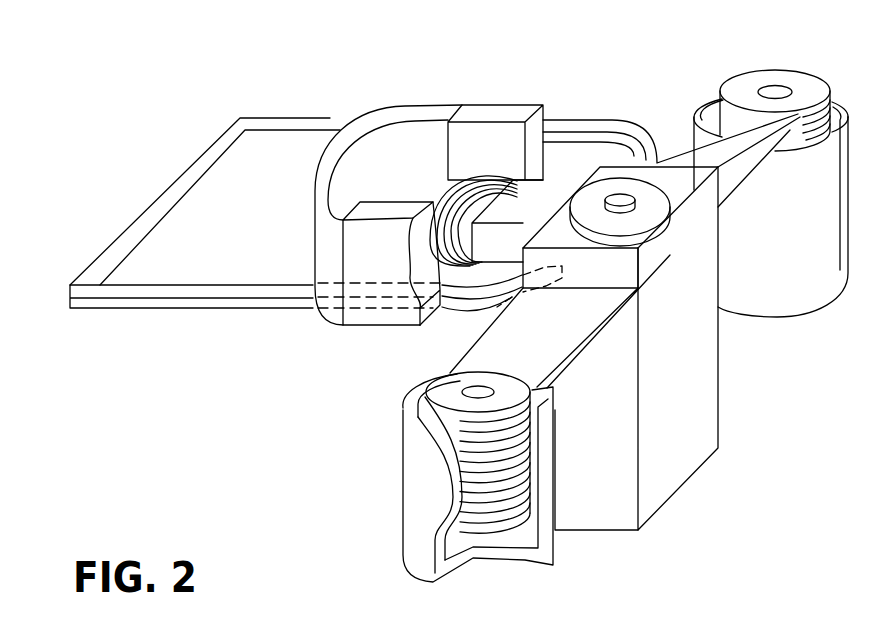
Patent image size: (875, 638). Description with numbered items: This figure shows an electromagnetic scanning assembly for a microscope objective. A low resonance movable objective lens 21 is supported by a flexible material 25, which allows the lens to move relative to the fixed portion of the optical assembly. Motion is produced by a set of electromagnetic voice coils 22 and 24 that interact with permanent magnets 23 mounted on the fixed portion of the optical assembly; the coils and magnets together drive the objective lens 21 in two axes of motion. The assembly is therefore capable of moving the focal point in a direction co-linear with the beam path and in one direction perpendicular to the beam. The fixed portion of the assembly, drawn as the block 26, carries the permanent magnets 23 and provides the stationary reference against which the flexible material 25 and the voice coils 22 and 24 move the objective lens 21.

The movable objective lens 21 is at (613, 203).
The electromagnetic voice coil 22 is at (818, 88).
The permanent magnet 23 is at (513, 112).
The electromagnetic voice coil 24 is at (485, 158).
The flexible material 25 is at (270, 304).
The housing block 26 is at (700, 387).